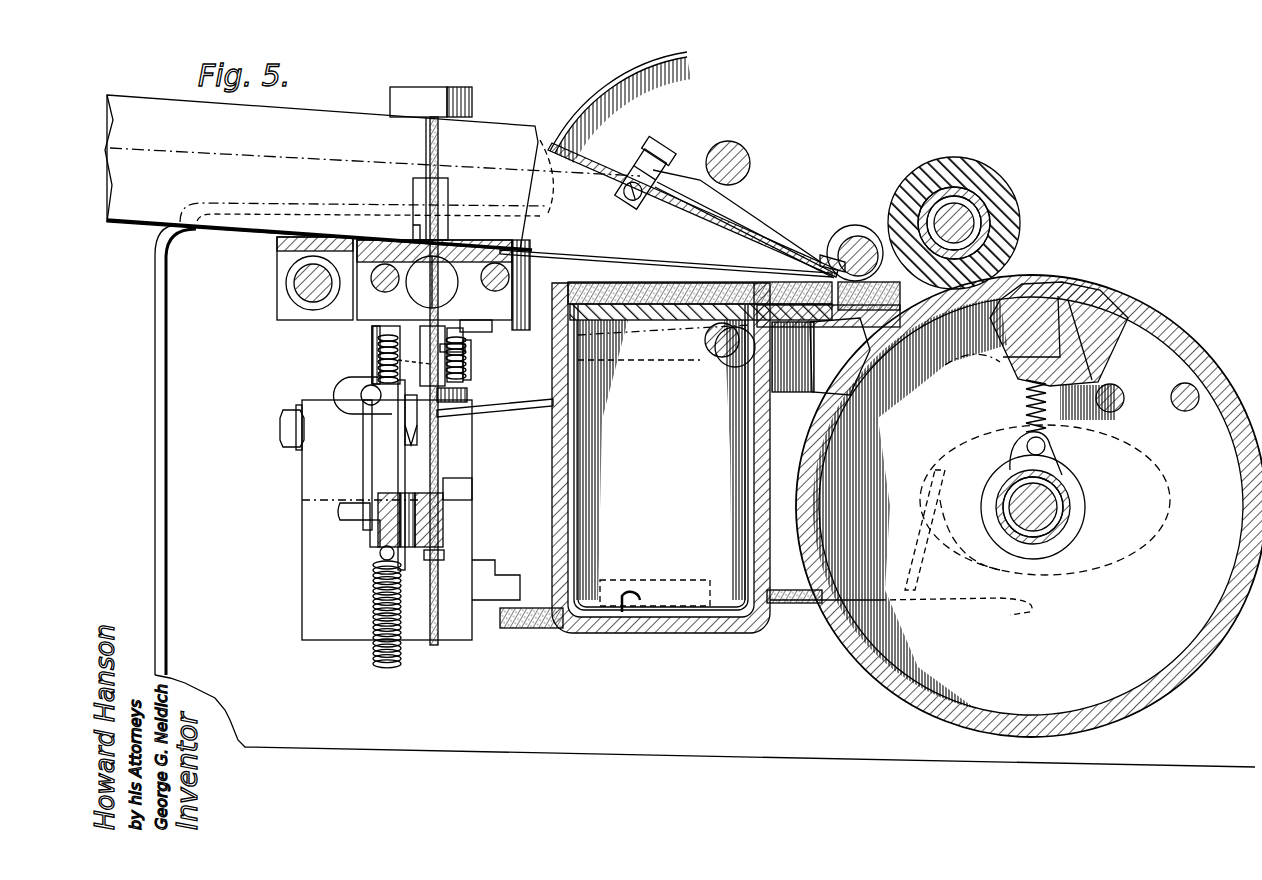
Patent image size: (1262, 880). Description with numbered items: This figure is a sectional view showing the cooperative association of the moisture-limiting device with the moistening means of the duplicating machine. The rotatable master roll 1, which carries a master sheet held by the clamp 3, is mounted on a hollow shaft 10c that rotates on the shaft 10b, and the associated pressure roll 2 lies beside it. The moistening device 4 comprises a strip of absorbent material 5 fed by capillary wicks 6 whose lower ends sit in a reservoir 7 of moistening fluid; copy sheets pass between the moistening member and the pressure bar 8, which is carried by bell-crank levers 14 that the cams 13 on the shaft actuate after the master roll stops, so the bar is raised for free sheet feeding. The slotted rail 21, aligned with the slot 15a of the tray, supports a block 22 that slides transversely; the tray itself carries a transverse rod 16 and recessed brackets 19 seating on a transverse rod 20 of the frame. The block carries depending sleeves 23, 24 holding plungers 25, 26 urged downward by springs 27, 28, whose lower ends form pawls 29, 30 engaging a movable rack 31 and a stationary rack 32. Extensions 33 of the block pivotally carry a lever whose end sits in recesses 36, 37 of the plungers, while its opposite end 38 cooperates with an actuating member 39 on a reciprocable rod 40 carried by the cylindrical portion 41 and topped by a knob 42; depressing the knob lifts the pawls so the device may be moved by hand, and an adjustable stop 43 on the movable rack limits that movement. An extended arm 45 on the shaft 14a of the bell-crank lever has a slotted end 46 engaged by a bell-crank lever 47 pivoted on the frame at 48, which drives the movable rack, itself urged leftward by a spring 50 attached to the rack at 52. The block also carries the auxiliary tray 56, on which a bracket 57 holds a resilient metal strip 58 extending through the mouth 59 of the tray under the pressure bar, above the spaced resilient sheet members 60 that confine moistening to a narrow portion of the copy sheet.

The master roll 1 is at (1202, 365).
The pressure roll 2 is at (1020, 222).
The clamp 3 is at (1052, 284).
The moistening device 4 is at (678, 420).
The strip of absorbent material 5 is at (690, 280).
The capillary wicks 6 is at (748, 452).
The reservoir 7 is at (735, 636).
The pressure bar 8 is at (860, 228).
The shaft 10b is at (1070, 500).
The hollow shaft 10c is at (1055, 476).
The cams 13 is at (1072, 560).
The bell-crank levers 14 is at (815, 380).
The shaft of the bell-crank lever 14a is at (705, 350).
The slot in the tray 15a is at (438, 250).
The transverse rod 16 is at (738, 145).
The recessed brackets 19 is at (277, 260).
The transverse rod 20 is at (300, 310).
The slotted rail 21 is at (468, 246).
The block 22 is at (357, 312).
The sleeve 23 is at (372, 345).
The sleeve 24 is at (463, 336).
The plunger 25 is at (395, 362).
The plunger 26 is at (472, 372).
The spring 27 is at (375, 359).
The spring 28 is at (464, 361).
The pawl 29 is at (372, 486).
The pawl 30 is at (450, 484).
The rack 31 is at (372, 530).
The rack 32 is at (443, 523).
The extensions 33 is at (469, 391).
The recess 36 is at (405, 432).
The recess 37 is at (420, 437).
The opposite end of lever 38 is at (466, 349).
The actuating member 39 is at (495, 291).
The reciprocably movable rod 40 is at (440, 140).
The cylindrical portion 41 is at (406, 285).
The knob 42 is at (472, 102).
The adjustable stop 43 is at (372, 540).
The extended arm 45 is at (517, 402).
The slotted end 46 is at (334, 392).
The bell-crank lever 47 is at (363, 434).
The pivot 48 is at (280, 430).
The spring 50 is at (372, 655).
The attachment point 52 is at (436, 560).
The auxiliary tray 56 is at (342, 126).
The bracket 57 is at (645, 158).
The resilient metal strip 58 is at (705, 218).
The mouth 59 is at (830, 258).
The resilient sheet members 60 is at (580, 256).